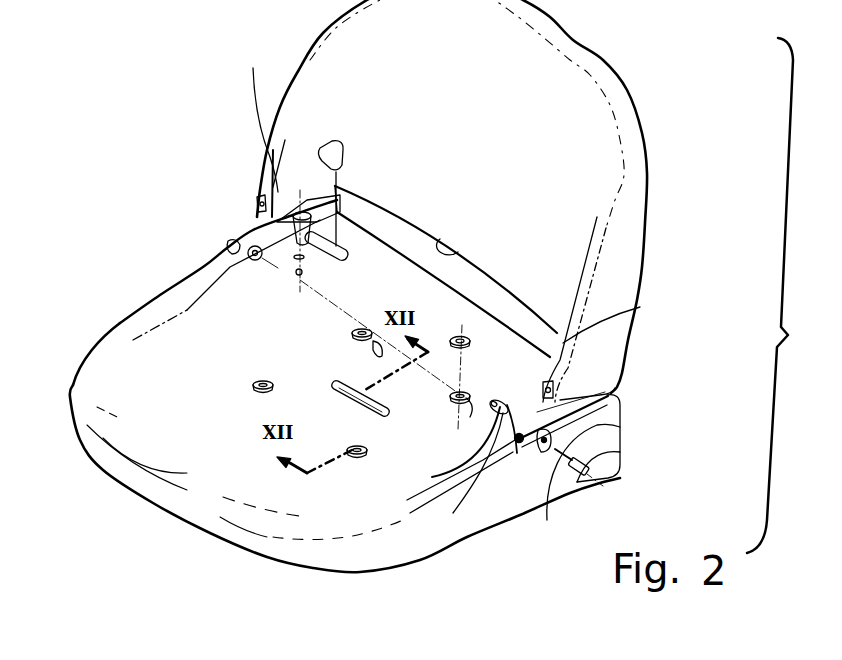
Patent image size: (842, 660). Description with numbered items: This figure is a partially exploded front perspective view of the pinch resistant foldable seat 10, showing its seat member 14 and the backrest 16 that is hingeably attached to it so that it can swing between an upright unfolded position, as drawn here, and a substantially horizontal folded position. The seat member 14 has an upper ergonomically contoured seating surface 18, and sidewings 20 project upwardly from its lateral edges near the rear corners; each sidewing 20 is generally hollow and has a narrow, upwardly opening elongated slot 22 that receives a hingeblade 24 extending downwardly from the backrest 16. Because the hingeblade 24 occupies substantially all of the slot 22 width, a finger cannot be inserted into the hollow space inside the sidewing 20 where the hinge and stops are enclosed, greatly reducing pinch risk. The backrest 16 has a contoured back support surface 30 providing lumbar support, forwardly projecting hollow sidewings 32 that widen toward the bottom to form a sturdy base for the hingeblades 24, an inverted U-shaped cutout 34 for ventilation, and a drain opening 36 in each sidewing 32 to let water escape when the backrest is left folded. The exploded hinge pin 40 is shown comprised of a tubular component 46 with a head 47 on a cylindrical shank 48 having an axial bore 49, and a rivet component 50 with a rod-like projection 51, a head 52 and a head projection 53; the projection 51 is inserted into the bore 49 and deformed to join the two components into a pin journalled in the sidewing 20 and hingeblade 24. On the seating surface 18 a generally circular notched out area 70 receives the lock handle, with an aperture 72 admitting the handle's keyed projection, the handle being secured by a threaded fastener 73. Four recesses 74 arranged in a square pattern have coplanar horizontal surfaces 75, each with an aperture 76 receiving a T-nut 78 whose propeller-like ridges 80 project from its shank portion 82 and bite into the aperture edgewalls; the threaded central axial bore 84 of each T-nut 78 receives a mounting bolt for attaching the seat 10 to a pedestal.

The foldable seat 10 is at (170, 168).
The seat member 14 is at (383, 552).
The backrest 16 is at (560, 73).
The seating surface 18 is at (187, 433).
The sidewings 20 is at (200, 275).
The slot 22 is at (226, 246).
The hingeblade 24 is at (252, 218).
The back support surface 30 is at (470, 142).
The sidewings 32 is at (454, 194).
The inverted U-shaped cutout 34 is at (458, 252).
The drain opening 36 is at (267, 153).
The hinge pin 40 is at (620, 428).
The tubular component 46 is at (432, 477).
The head 47 is at (503, 396).
The cylindrical shank 48 is at (513, 447).
The axial bore 49 is at (466, 476).
The rivet component 50 is at (621, 455).
The rod-like projection 51 is at (582, 483).
The head 52 is at (580, 475).
The head projection 53 is at (593, 475).
The notched out area 70 is at (337, 195).
The aperture 72 is at (296, 245).
The threaded fastener 73 is at (302, 272).
The recesses 74 is at (262, 378).
The horizontal surfaces 75 is at (272, 383).
The aperture 76 is at (256, 392).
The T-nut 78 is at (473, 337).
The ridges 80 is at (468, 347).
The shank portion 82 is at (337, 407).
The central axial bore 84 is at (453, 334).